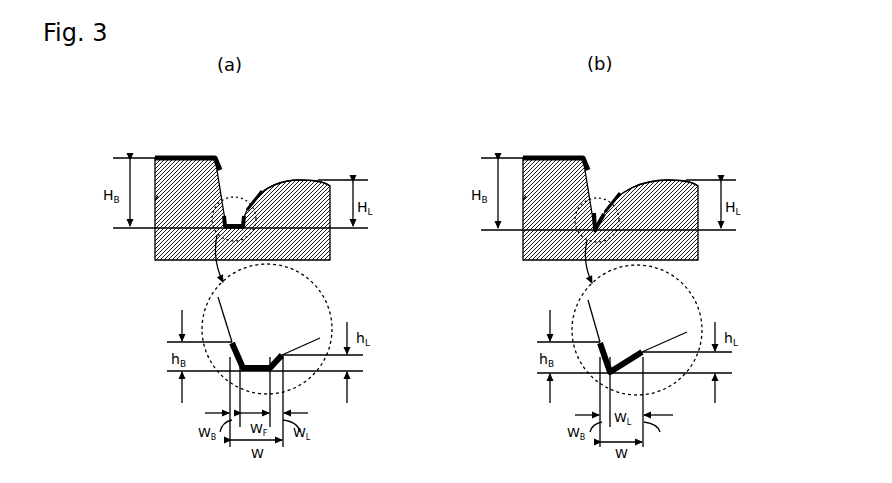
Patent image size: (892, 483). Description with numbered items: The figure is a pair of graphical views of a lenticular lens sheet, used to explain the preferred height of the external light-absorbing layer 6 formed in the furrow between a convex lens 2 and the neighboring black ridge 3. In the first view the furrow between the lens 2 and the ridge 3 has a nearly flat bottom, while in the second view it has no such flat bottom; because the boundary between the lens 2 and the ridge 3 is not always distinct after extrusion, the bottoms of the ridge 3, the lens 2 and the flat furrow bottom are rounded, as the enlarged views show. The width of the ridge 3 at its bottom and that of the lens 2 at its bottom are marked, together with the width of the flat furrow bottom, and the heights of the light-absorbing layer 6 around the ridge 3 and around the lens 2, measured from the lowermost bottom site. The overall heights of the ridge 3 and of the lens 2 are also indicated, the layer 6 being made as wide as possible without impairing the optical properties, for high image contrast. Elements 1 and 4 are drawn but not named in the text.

In FIG. 3A, the substrate 1 is at (327, 250).
In FIG. 3B, the substrate 1 is at (646, 240).
In FIG. 3A, the lens 2 is at (293, 202).
In FIG. 3B, the lens 2 is at (651, 158).
In FIG. 3A, the ridge 3 is at (168, 195).
In FIG. 3B, the ridge 3 is at (503, 248).
In FIG. 3A, the recording film on land 4 is at (187, 155).
In FIG. 3B, the recording film on land 4 is at (556, 129).
In FIG. 3A, the external light-absorbing layer 6 is at (232, 217).
In FIG. 3B, the external light-absorbing layer 6 is at (600, 165).